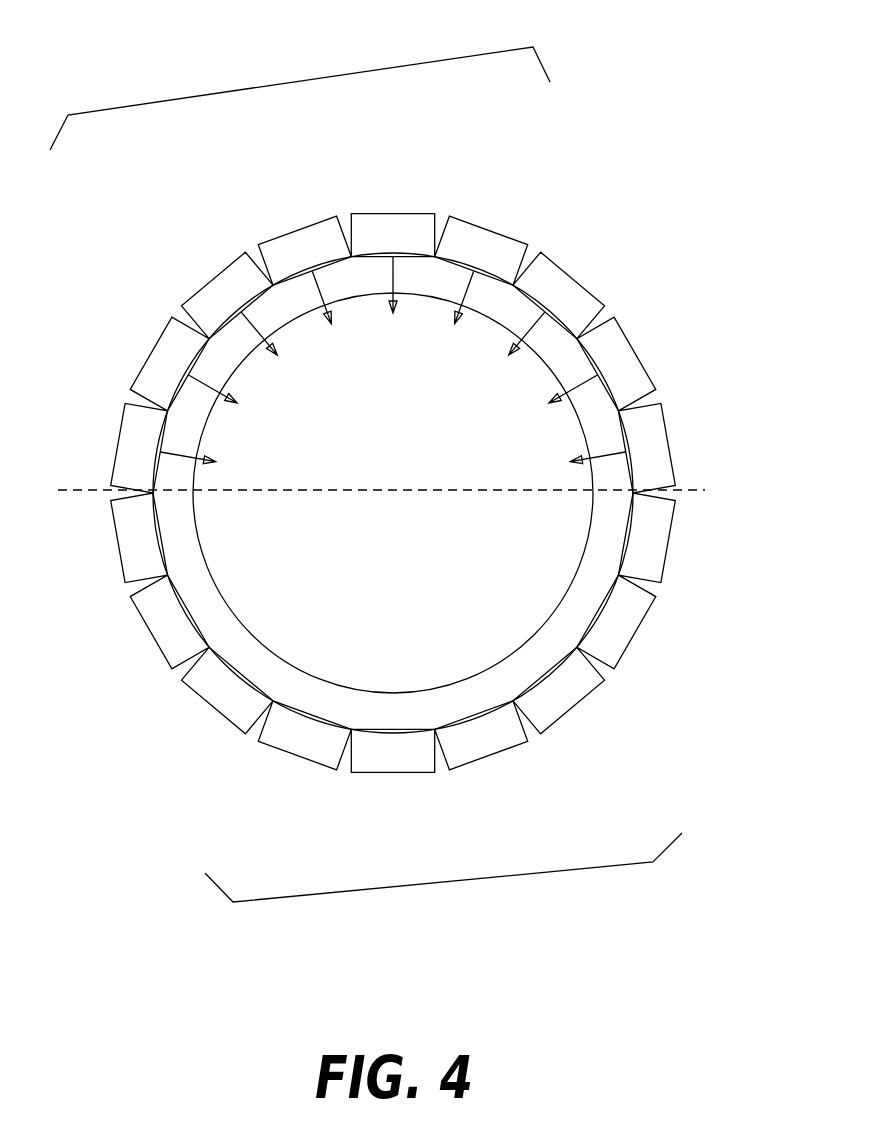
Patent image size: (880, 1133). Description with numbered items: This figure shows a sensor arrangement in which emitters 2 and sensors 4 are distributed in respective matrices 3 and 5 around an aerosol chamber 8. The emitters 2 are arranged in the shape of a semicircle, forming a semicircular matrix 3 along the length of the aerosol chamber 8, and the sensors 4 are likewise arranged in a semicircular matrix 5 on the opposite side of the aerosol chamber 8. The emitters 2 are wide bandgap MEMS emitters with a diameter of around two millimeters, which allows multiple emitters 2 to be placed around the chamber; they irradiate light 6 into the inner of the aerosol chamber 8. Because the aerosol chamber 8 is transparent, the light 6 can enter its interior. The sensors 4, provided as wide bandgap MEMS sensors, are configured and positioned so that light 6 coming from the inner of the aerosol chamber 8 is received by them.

The emitters 2 is at (304, 248).
The matrix 3 is at (293, 80).
The sensors 4 is at (401, 758).
The matrix 5 is at (437, 880).
The light 6 is at (392, 278).
The aerosol chamber 8 is at (411, 385).